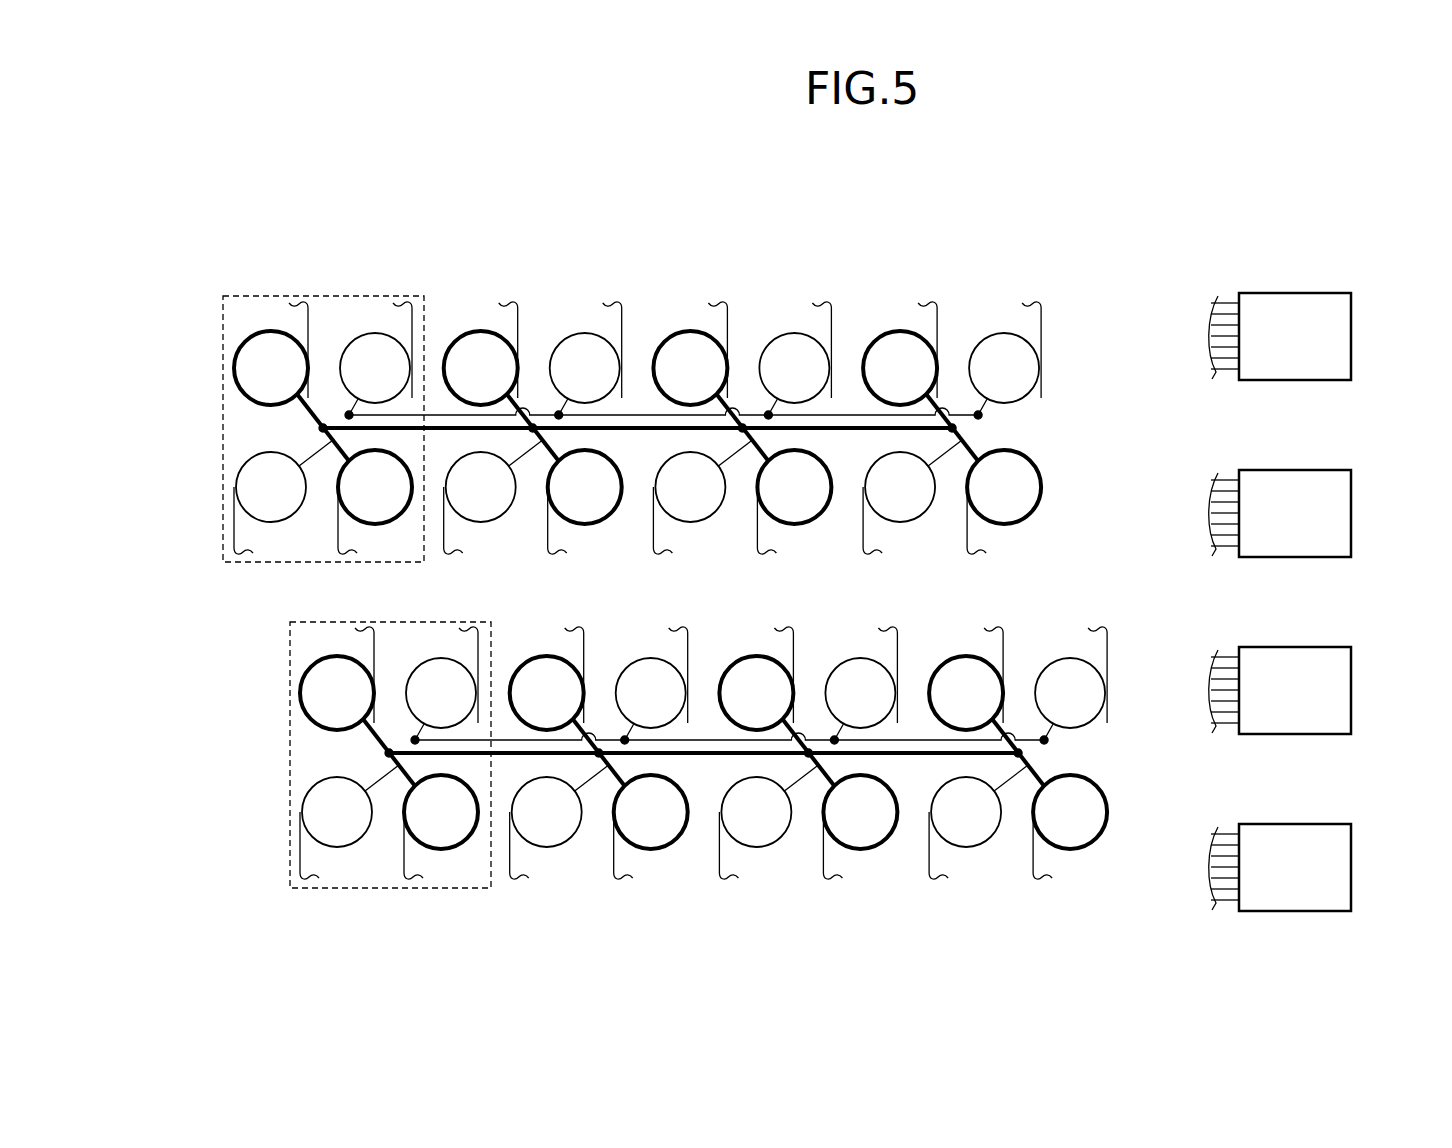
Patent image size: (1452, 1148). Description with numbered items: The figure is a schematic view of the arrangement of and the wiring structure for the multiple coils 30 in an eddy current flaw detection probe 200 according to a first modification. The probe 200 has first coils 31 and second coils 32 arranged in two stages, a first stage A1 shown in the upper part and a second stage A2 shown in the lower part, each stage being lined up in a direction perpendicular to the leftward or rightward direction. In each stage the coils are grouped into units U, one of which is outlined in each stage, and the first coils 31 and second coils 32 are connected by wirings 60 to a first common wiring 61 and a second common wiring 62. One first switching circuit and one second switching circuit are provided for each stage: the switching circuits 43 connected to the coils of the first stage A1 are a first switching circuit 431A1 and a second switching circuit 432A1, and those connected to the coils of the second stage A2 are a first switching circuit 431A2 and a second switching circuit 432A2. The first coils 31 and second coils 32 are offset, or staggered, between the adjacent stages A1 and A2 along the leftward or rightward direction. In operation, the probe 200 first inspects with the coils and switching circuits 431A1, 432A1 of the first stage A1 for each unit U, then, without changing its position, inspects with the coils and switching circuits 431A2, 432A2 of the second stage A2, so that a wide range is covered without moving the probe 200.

The eddy current flaw detection probe 200 is at (1214, 221).
The coil 30 is at (639, 586).
The first coil 31 is at (234, 368).
The second coil 32 is at (234, 486).
The wiring 60 is at (793, 587).
The first common wiring 61 is at (840, 427).
The second common wiring 62 is at (632, 413).
The switching circuit 43 is at (1342, 602).
The first switching circuit 431A1 is at (1352, 338).
The second switching circuit 432A1 is at (1352, 515).
The first switching circuit 431A2 is at (1352, 692).
The second switching circuit 432A2 is at (1352, 869).
The unit U is at (271, 562).
The first stage A1 is at (1128, 413).
The second stage A2 is at (1128, 738).